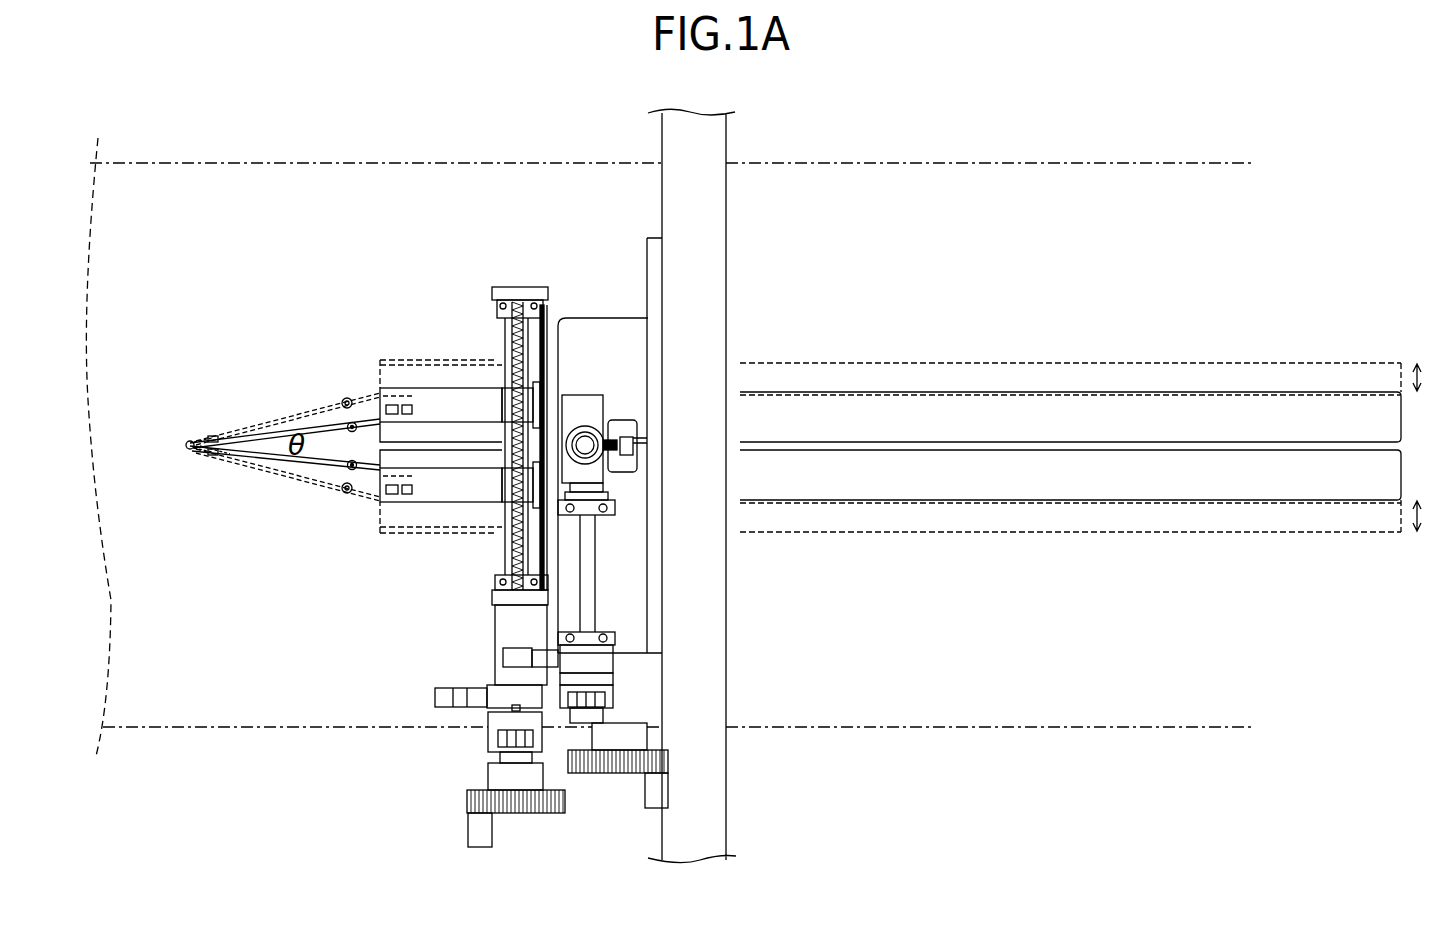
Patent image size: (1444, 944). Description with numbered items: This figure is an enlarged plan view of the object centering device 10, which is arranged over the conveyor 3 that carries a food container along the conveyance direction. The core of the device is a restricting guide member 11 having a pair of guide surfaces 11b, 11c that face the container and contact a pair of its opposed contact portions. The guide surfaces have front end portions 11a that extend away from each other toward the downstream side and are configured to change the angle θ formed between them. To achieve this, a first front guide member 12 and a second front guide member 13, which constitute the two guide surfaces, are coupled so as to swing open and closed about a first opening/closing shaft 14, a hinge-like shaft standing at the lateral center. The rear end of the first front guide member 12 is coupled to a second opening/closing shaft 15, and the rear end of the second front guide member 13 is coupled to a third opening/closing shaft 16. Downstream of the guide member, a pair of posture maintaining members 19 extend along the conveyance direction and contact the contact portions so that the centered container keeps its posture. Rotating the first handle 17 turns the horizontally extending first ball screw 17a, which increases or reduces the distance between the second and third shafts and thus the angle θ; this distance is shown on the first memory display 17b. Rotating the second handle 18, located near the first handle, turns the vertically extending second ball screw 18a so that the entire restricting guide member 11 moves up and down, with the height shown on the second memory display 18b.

The conveyor 3 is at (219, 186).
The object centering device 10 is at (517, 268).
The restricting guide member 11 is at (233, 458).
The front end portions 11a is at (188, 452).
The guide surface 11b is at (248, 426).
The guide surface 11c is at (305, 470).
The first front guide member 12 is at (283, 440).
The second front guide member 13 is at (270, 462).
The first opening/closing shaft 14 is at (190, 440).
The second opening/closing shaft 15 is at (349, 398).
The third opening/closing shaft 16 is at (352, 492).
The first handle 17 is at (520, 814).
The first ball screw 17a is at (531, 312).
The first memory display 17b is at (492, 728).
The second handle 18 is at (618, 774).
The second ball screw 18a is at (587, 446).
The second memory display 18b is at (592, 690).
The posture maintaining members 19 is at (448, 462).